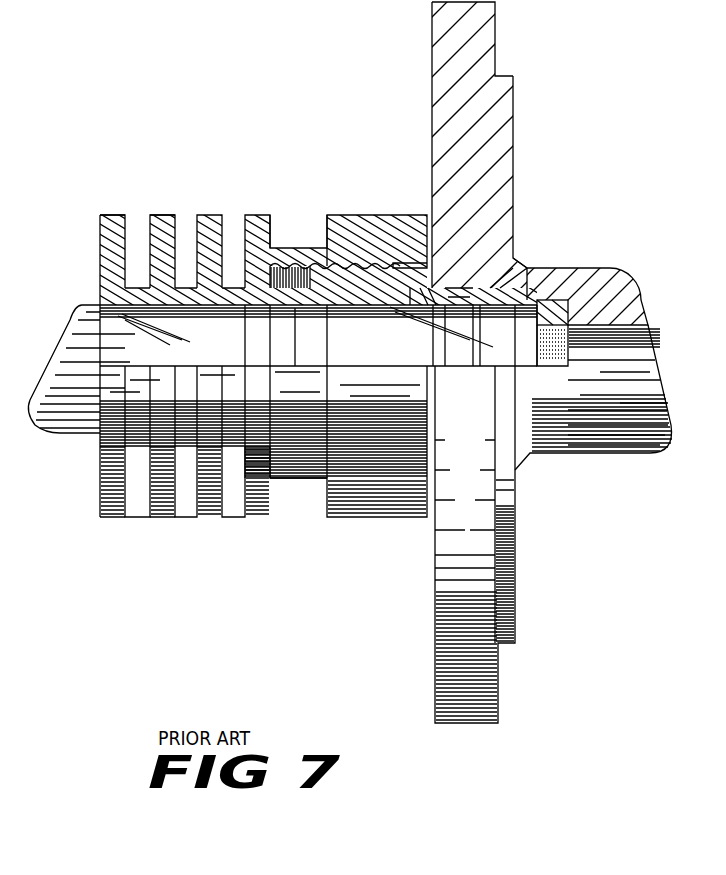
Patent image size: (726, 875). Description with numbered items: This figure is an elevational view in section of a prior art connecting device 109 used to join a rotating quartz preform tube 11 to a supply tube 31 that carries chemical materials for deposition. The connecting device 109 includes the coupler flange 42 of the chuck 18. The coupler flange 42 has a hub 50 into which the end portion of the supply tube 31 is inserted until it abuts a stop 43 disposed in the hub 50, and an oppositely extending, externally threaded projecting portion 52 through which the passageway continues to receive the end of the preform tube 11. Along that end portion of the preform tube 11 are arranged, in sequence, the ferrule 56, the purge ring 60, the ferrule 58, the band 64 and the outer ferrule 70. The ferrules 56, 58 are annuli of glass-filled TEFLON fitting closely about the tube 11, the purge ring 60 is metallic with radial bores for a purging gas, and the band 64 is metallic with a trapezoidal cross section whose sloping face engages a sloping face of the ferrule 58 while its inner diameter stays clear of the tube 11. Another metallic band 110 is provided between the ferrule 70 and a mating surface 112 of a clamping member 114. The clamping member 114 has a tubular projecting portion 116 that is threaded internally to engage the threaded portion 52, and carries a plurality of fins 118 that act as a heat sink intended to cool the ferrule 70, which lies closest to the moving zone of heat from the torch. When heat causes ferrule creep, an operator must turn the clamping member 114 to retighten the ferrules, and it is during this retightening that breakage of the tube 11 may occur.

The preform tube 11 is at (82, 300).
The chuck 18 is at (436, 115).
The supply tube 31 is at (646, 339).
The coupler flange 42 is at (440, 28).
The stop 43 is at (553, 305).
The hub 50 is at (590, 268).
The extending portion 52 is at (380, 280).
The ferrule 56 is at (492, 289).
The ferrule 58 is at (425, 295).
The purge ring 60 is at (462, 300).
The band 64 is at (385, 312).
The outer ferrule 70 is at (318, 290).
The prior art connecting device 109 is at (228, 178).
The metallic band 110 is at (285, 307).
The mating surface 112 is at (243, 300).
The clamping member 114 is at (100, 490).
The tubular projecting portion 116 is at (283, 250).
The fins 118 is at (160, 214).